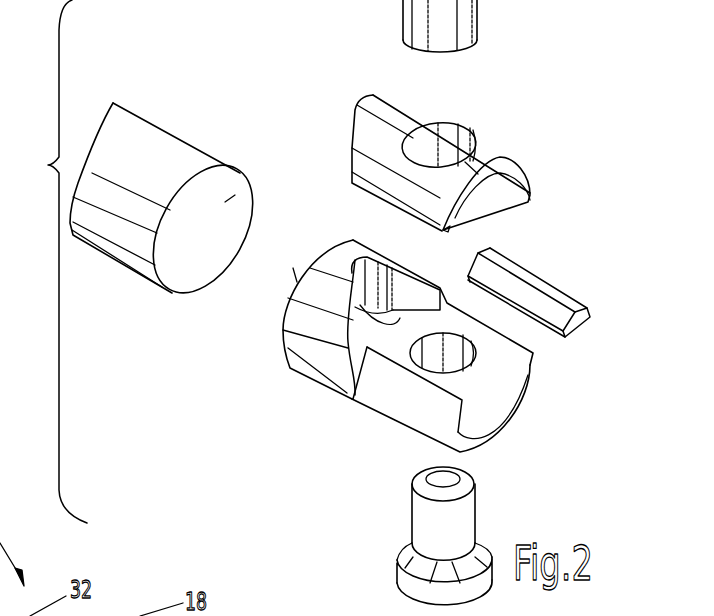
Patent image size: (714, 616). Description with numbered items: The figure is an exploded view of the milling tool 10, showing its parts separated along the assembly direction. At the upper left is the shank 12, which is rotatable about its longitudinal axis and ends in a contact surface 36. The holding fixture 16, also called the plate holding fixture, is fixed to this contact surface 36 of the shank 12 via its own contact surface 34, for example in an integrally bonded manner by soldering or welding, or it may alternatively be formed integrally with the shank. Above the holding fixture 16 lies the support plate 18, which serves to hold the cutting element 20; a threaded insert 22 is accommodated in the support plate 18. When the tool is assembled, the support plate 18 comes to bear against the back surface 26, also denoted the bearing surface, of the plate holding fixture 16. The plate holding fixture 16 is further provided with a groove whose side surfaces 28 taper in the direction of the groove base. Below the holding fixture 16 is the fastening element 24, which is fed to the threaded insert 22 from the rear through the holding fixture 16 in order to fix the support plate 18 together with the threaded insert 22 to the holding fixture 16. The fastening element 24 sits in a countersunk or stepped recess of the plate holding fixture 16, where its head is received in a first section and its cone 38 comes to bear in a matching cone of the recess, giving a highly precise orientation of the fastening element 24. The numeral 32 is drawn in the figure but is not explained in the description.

The tool 10 is at (53, 261).
The shank 12 is at (120, 160).
The holding fixture 16 is at (303, 330).
The support plate 18 is at (367, 148).
The cutting element 20 is at (480, 270).
The threaded insert 22 is at (463, 18).
The fastening element 24 is at (445, 478).
The back surface 26 is at (401, 335).
The side surfaces 28 is at (411, 288).
The head 32 is at (423, 505).
The contact surface 34 is at (295, 275).
The contact surface 36 is at (223, 199).
The cone 38 is at (407, 546).